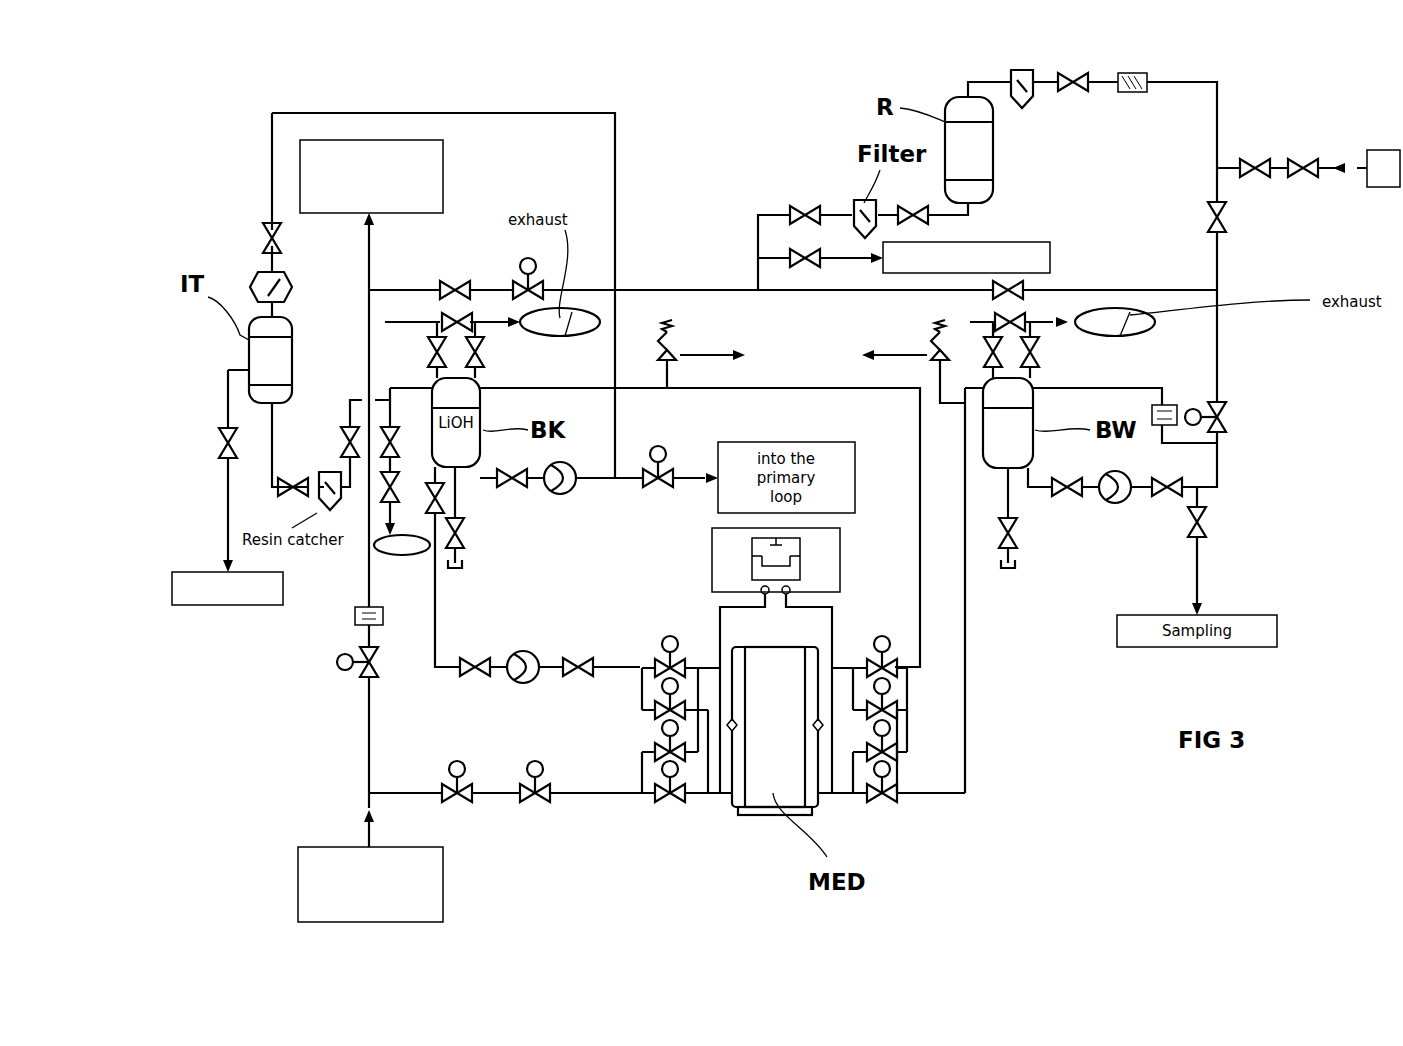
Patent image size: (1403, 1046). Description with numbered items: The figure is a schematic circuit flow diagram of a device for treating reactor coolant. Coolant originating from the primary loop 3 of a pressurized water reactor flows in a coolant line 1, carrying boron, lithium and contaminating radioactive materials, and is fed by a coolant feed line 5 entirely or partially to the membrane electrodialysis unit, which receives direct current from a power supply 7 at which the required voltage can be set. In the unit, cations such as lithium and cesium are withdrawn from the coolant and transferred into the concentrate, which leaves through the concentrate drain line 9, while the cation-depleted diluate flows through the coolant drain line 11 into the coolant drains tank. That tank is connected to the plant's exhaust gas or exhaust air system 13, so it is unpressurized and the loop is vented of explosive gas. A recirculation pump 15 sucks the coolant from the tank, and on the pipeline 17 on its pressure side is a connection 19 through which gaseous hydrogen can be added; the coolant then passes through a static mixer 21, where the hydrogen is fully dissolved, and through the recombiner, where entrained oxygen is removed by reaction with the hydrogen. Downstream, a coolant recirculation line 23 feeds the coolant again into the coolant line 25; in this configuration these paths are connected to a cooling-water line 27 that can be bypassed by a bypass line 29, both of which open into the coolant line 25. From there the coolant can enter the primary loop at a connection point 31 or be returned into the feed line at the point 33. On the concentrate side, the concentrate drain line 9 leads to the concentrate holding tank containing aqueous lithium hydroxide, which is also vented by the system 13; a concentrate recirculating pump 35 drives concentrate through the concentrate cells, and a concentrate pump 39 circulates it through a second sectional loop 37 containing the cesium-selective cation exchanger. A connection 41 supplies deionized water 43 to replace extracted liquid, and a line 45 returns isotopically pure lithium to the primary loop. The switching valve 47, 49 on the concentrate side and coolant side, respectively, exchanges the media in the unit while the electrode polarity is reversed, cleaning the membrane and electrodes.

The coolant line 1 is at (493, 797).
The primary loop 3 is at (367, 834).
The coolant feed line 5 is at (590, 797).
The power supply 7 is at (842, 545).
The concentrate drain line 9 is at (789, 385).
The coolant drain line 11 is at (965, 655).
The exhaust gas or exhaust air system 13 is at (572, 336).
The recirculation pump 15 is at (1105, 505).
The pipeline 17 is at (1217, 345).
The connection 19 is at (1220, 168).
The static mixer 21 is at (1132, 93).
The coolant recirculation line 23 is at (838, 212).
The coolant line 25 is at (695, 282).
The cooling-water line 27 is at (1070, 92).
The bypass line 29 is at (1145, 288).
The connection point 31 is at (372, 270).
The point 33 is at (372, 790).
The concentrate recirculating pump 35 is at (540, 660).
The second sectional loop 37 is at (618, 128).
The concentrate pump 39 is at (548, 497).
The connection 41 is at (410, 385).
The deionized water 43 is at (402, 556).
The line 45 is at (690, 492).
The switching valve 47 is at (640, 765).
The switching valve 49 is at (912, 770).